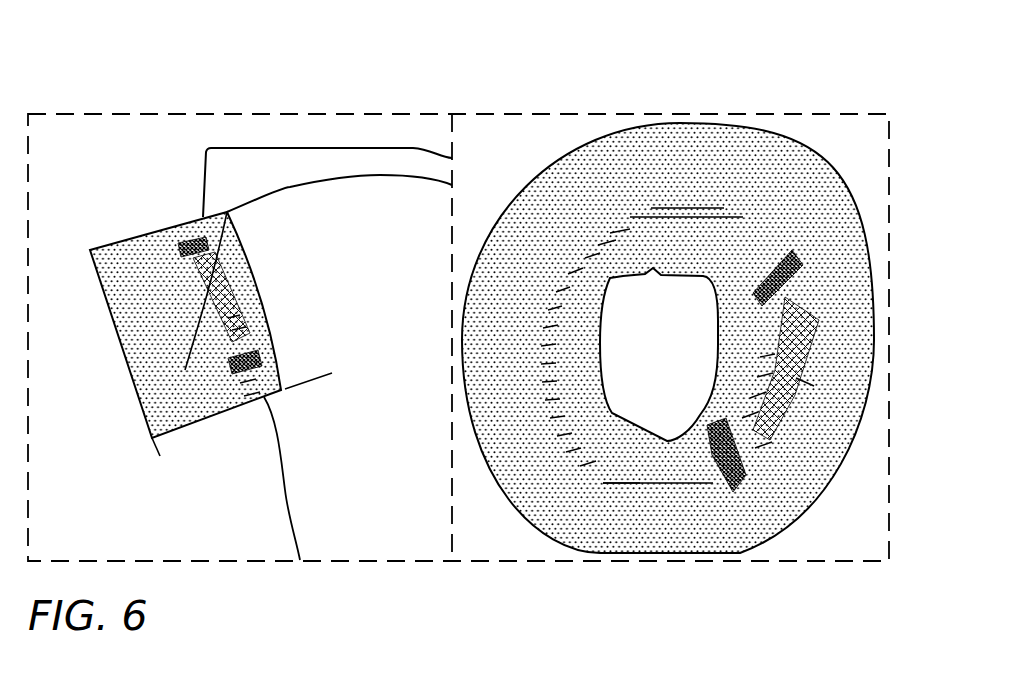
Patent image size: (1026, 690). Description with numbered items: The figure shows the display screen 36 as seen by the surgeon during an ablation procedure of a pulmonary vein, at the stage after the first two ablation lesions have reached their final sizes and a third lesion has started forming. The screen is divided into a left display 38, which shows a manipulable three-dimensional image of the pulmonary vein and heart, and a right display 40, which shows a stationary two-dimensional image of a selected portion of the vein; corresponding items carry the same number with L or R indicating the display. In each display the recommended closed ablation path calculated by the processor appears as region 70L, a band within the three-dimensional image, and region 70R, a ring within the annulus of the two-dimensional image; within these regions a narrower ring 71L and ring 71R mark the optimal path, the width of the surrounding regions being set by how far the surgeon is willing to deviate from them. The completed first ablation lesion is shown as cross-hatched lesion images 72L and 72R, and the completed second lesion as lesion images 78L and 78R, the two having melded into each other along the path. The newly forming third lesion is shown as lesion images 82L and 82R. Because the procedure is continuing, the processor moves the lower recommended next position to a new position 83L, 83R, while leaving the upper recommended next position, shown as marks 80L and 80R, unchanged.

The display screen 36 is at (80, 103).
The left display 38 is at (410, 112).
The right display 40 is at (668, 112).
The region 70L is at (283, 376).
The region 70R is at (667, 500).
The ring 71L is at (255, 383).
The ring 71R is at (603, 480).
The lesion image 72L is at (185, 370).
The lesion image 72R is at (806, 380).
The lesion image 78L is at (220, 255).
The lesion image 78R is at (803, 303).
The mark 80L is at (186, 240).
The mark 80R is at (777, 250).
The lesion image 82L is at (247, 333).
The lesion image 82R is at (767, 450).
The new position 83L is at (262, 357).
The new position 83R is at (732, 493).